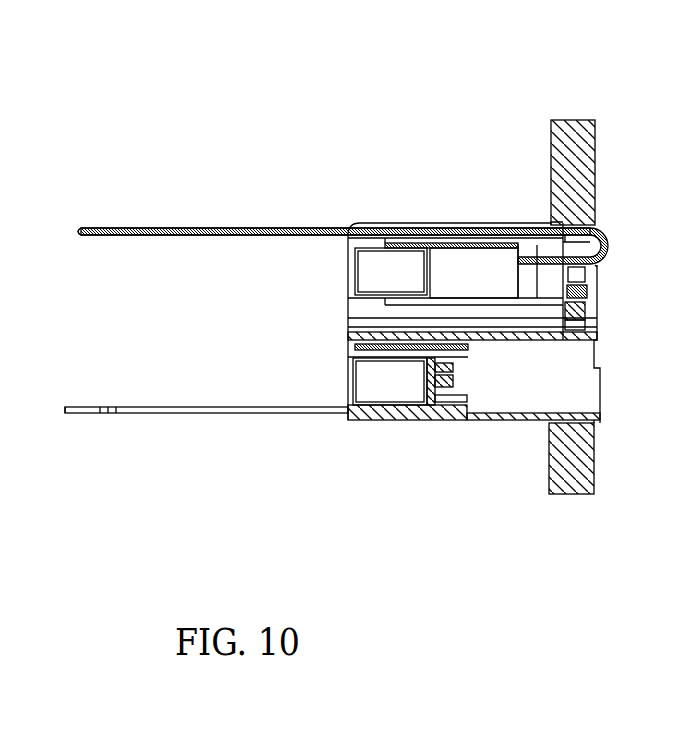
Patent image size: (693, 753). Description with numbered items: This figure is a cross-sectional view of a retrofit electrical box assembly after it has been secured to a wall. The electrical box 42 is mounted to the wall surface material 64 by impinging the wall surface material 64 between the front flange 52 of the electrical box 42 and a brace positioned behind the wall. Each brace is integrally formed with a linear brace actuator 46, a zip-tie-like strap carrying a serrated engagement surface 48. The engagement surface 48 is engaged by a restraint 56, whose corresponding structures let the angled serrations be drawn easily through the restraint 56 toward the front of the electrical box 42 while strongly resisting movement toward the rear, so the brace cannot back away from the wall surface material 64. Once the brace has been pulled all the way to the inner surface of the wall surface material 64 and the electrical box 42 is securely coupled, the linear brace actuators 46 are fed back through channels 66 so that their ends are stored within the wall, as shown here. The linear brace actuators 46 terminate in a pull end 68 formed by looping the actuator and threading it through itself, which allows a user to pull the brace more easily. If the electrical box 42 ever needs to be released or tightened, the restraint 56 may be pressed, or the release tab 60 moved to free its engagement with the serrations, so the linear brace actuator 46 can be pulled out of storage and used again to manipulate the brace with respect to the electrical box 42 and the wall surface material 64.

The electrical box 42 is at (487, 415).
The linear brace actuator 46 is at (609, 238).
The engagement surface 48 is at (262, 228).
The flange 52 is at (603, 226).
The restraint 56 is at (604, 263).
The release tab 60 is at (598, 290).
The wall surface material 64 is at (580, 126).
The channel 66 is at (603, 231).
The pull end 68 is at (88, 242).